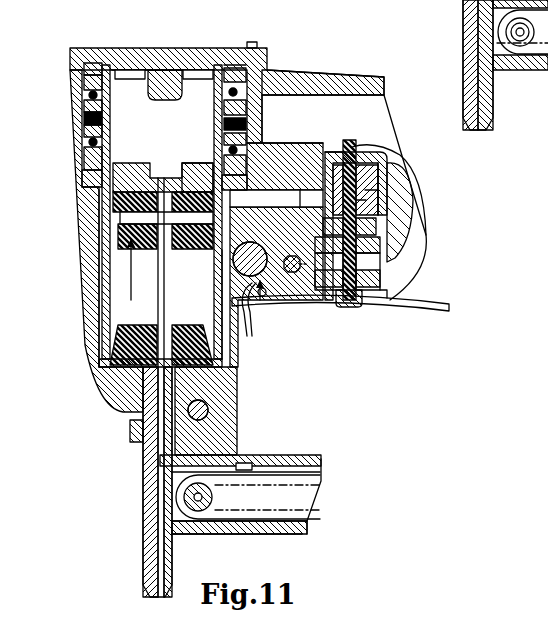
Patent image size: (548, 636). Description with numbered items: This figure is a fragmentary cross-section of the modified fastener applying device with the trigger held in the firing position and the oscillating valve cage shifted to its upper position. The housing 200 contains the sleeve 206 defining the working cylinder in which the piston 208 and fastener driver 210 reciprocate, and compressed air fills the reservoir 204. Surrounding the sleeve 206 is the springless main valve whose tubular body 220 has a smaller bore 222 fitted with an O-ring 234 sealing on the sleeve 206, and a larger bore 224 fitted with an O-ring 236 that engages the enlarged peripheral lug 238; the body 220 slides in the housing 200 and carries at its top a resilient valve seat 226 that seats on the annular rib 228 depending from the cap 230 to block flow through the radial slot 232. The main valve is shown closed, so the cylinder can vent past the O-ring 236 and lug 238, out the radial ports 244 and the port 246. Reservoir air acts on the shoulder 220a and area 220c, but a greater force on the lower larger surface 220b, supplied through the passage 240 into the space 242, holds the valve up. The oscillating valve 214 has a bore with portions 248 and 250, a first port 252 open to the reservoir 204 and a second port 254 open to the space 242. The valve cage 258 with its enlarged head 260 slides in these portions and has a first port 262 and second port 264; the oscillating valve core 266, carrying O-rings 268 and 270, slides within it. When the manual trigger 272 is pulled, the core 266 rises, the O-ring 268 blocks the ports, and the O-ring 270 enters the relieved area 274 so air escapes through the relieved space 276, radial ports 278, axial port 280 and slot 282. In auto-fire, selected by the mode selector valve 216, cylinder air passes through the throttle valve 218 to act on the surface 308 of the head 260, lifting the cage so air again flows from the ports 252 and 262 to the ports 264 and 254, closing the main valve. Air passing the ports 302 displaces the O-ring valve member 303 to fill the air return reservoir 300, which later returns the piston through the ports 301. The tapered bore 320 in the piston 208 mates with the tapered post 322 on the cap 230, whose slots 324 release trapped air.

The housing 200 is at (80, 245).
The reservoir 204 is at (395, 109).
The sleeve 206 is at (103, 288).
The piston 208 is at (190, 175).
The fastener driver 210 is at (165, 302).
The oscillating valve 214 is at (378, 232).
The mode selector valve 216 is at (257, 320).
The throttle valve 218 is at (292, 279).
The body 220 is at (85, 114).
The shoulder 220a is at (263, 70).
The lower larger surface 220b is at (213, 158).
The upper end area 220c is at (236, 64).
The bore 222 is at (100, 178).
The bore 224 is at (85, 86).
The resilient valve seat 226 is at (85, 72).
The annular rib 228 is at (236, 72).
The cap 230 is at (130, 62).
The radial slot 232 is at (190, 73).
The O-ring 234 is at (88, 166).
The O-ring 236 is at (88, 96).
The enlarged peripheral lug 238 is at (85, 124).
The passage 240 is at (278, 207).
The space 242 is at (278, 140).
The radial ports 244 is at (88, 135).
The port 246 is at (85, 146).
The bore portion 248 is at (372, 182).
The bore portion 250 is at (380, 262).
The first port 252 is at (330, 150).
The second port 254 is at (318, 215).
The valve cage 258 is at (276, 252).
The enlarged head 260 is at (380, 245).
The first port 262 is at (360, 152).
The second port 264 is at (320, 192).
The oscillating valve core 266 is at (347, 168).
The O-ring 268 is at (372, 175).
The O-ring 270 is at (370, 190).
The relieved area 274 is at (338, 162).
The relieved space 276 is at (330, 292).
The radial ports 278 is at (367, 200).
The axial port 280 is at (360, 294).
The slot 282 is at (348, 308).
The air return reservoir 300 is at (220, 312).
The ports 301 is at (103, 320).
The ports 302 is at (218, 252).
The O-ring valve member 303 is at (99, 237).
The surface 308 is at (382, 300).
The tapered bore 320 is at (157, 172).
The tapered post 322 is at (165, 102).
The slots 324 is at (146, 96).
The manual trigger 272 is at (432, 310).